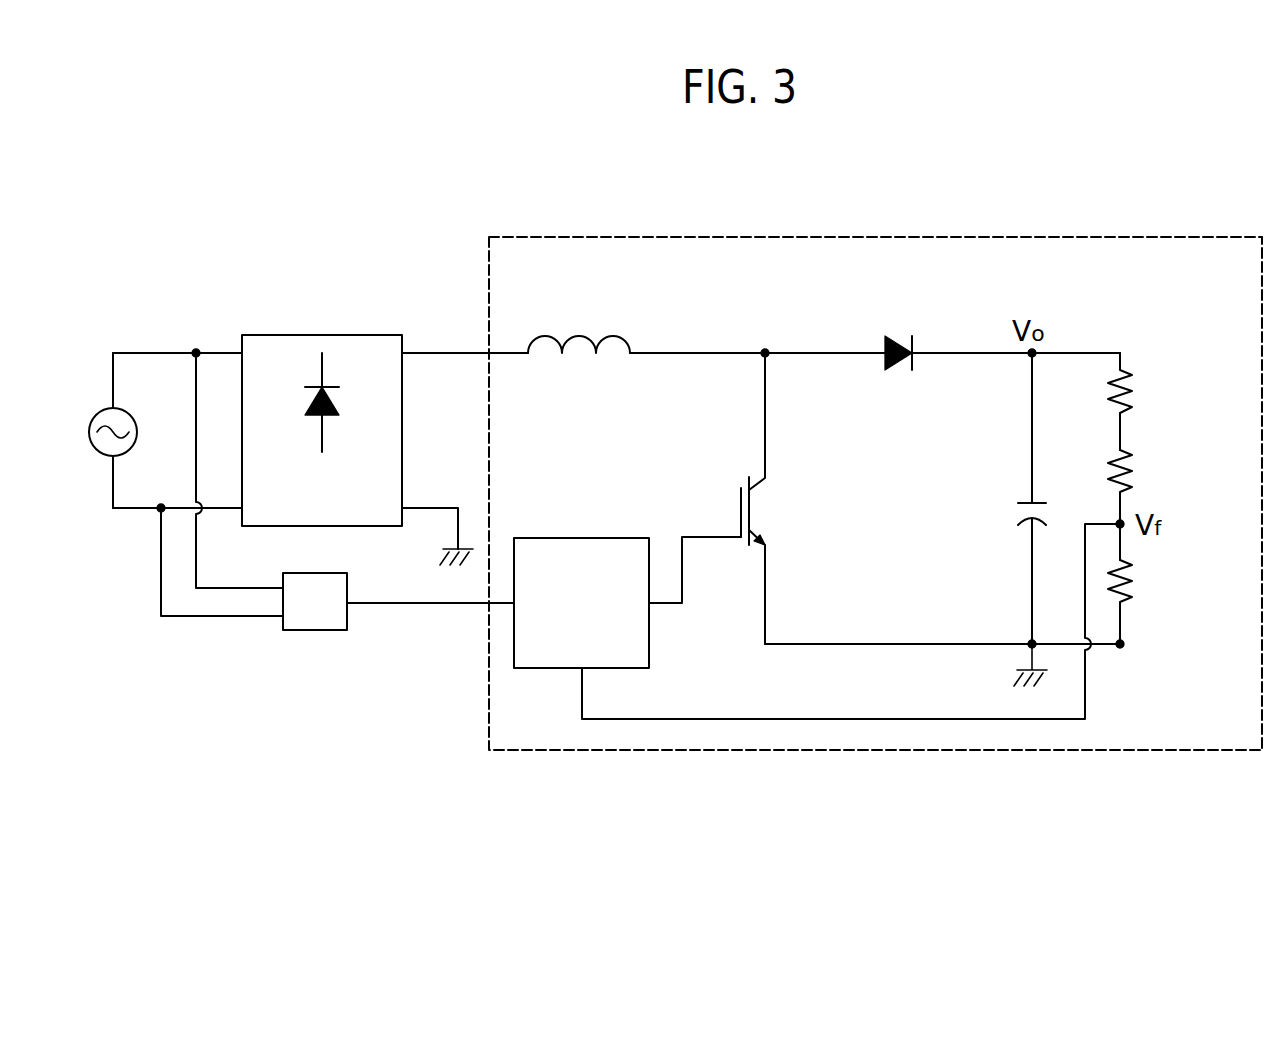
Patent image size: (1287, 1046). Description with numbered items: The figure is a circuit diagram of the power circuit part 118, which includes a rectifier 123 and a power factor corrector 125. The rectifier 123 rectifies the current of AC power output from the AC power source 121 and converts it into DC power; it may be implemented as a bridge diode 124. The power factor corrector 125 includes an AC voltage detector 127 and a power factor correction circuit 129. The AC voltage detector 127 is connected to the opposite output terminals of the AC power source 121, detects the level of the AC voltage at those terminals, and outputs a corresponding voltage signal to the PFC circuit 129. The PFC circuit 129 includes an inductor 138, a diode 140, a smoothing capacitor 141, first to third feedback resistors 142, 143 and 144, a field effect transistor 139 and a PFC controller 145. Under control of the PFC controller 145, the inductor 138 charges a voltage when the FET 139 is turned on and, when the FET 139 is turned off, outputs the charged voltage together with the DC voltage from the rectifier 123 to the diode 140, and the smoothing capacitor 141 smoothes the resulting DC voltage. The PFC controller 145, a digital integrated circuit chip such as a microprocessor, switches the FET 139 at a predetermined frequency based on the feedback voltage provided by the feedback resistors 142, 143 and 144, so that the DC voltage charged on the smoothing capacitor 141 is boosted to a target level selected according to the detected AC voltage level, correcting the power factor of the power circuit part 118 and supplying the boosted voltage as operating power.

The power circuit part 118 is at (505, 197).
The AC power source 121 is at (97, 451).
The rectifier 123 is at (270, 333).
The bridge diode 124 is at (320, 335).
The power factor corrector 125 is at (345, 669).
The AC voltage detector 127 is at (315, 641).
The power factor correction (PFC) circuit 129 is at (489, 695).
The inductor 138 is at (577, 335).
The field effect transistor (FET) 139 is at (757, 505).
The diode 140 is at (900, 335).
The smoothing capacitor 141 is at (1015, 506).
The first feedback resistor 142 is at (1135, 393).
The second feedback resistor 143 is at (1135, 472).
The third feedback resistor 144 is at (1135, 578).
The PFC controller 145 is at (580, 538).